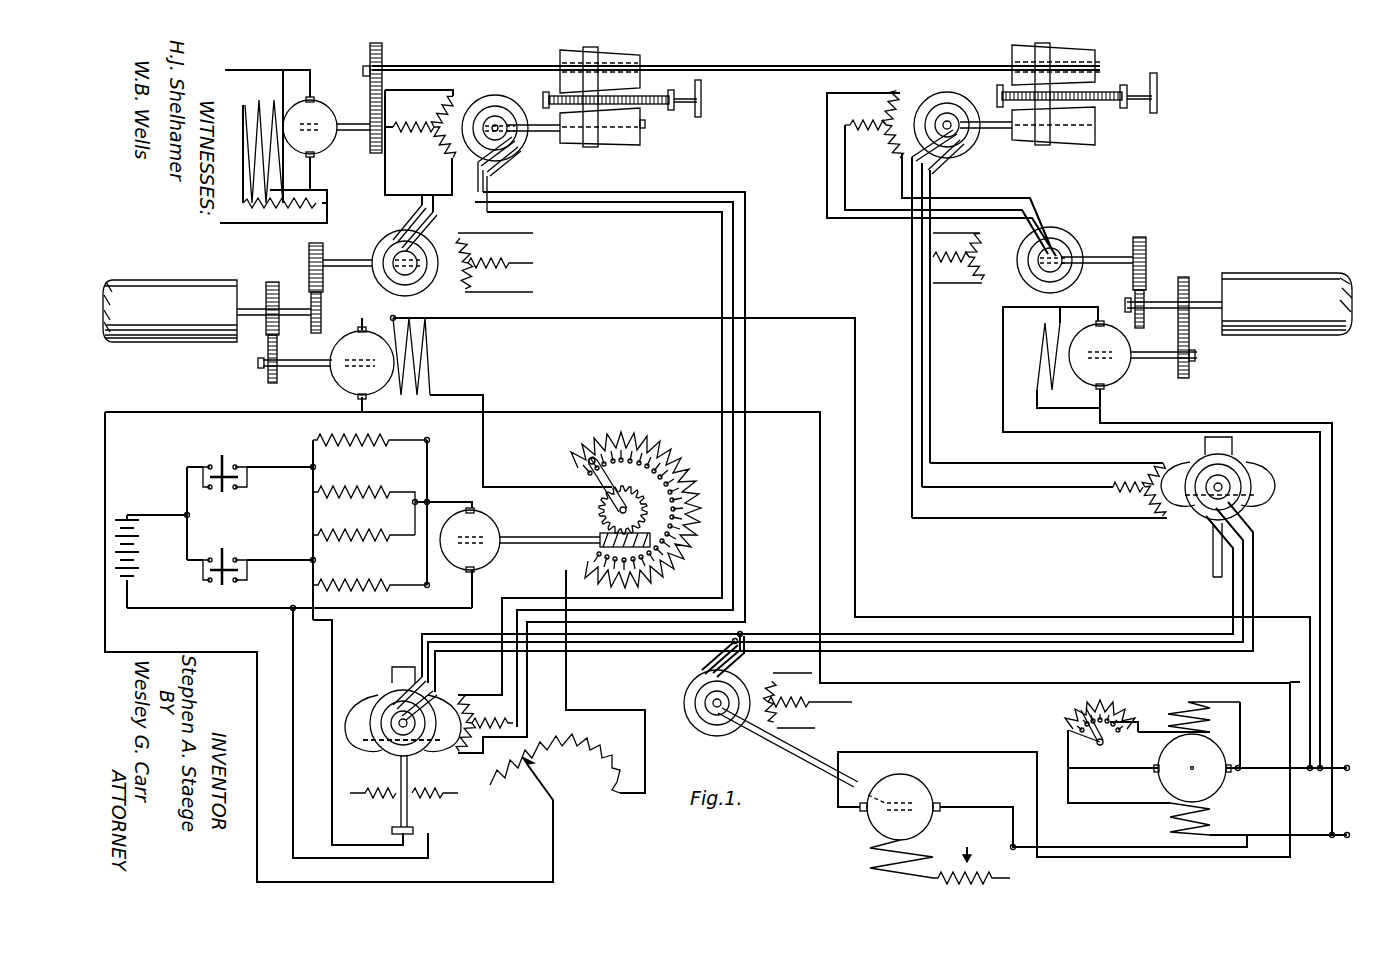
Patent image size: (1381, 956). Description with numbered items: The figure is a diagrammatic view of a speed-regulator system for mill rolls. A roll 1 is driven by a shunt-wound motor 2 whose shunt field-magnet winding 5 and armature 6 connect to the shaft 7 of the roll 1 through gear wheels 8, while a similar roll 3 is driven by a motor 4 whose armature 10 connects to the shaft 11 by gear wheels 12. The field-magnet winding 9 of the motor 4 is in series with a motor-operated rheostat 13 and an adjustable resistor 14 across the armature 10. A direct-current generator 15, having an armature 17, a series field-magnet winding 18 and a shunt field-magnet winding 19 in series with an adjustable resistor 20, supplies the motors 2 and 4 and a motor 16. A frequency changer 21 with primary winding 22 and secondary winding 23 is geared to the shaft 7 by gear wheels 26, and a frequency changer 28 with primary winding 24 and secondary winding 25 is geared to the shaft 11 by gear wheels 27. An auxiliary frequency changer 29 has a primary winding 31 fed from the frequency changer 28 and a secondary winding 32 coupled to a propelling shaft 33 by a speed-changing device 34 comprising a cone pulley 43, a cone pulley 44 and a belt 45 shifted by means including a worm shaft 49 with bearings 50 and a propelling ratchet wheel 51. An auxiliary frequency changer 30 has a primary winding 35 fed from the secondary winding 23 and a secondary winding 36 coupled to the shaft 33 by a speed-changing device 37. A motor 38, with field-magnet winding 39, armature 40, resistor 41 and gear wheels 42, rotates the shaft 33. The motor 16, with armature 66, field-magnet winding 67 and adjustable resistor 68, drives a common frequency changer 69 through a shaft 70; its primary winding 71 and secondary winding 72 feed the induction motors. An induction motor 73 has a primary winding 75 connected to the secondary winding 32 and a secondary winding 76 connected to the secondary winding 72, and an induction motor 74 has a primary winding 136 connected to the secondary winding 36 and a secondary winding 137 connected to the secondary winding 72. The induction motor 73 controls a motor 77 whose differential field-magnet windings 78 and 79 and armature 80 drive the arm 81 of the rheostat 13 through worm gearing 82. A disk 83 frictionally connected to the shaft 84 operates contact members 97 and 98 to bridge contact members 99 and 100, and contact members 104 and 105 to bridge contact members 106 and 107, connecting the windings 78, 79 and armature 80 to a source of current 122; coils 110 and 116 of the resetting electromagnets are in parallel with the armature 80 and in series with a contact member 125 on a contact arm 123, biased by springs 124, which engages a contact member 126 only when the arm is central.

The roll 1 is at (1245, 273).
The shunt-wound motor 2 is at (1152, 385).
The roll 3 is at (203, 280).
The motor 4 is at (320, 391).
The shunt field-magnet winding 5 is at (1037, 358).
The armature 6 is at (1135, 354).
The shaft 7 is at (1200, 298).
The gear wheels 8 is at (1192, 322).
The shunt field-magnet winding 9 is at (428, 353).
The armature 10 is at (348, 332).
The shaft 11 is at (246, 308).
The gear wheels 12 is at (266, 345).
The motor-operated rheostat 13 is at (700, 446).
The adjustable resistor 14 is at (575, 785).
The direct-current generator 15 is at (1253, 806).
The motor 16 is at (900, 776).
The armature 17 is at (1200, 755).
The series field-magnet winding 18 is at (1212, 823).
The shunt field-magnet winding 19 is at (1195, 704).
The adjustable resistor 20 is at (1095, 744).
The frequency changer 21 is at (1077, 210).
The primary winding 22 is at (971, 257).
The secondary winding 23 is at (1078, 250).
The primary winding 24 is at (463, 292).
The secondary winding 25 is at (422, 263).
The gear wheels 26 is at (1146, 272).
The gear wheels 27 is at (323, 280).
The frequency changer 28 is at (470, 228).
The auxiliary frequency changer 29 is at (548, 173).
The auxiliary frequency changer 30 is at (1015, 171).
The primary winding 31 is at (445, 108).
The secondary winding 32 is at (514, 108).
The propelling shaft 33 is at (705, 64).
The speed-changing device 34 is at (672, 95).
The primary winding 35 is at (898, 100).
The secondary winding 36 is at (958, 98).
The speed-changing device 37 is at (1150, 88).
The motor 38 is at (245, 115).
The field-magnet winding 39 is at (258, 103).
The armature 40 is at (330, 108).
The resistor 41 is at (264, 200).
The gear wheels 42 is at (370, 100).
The cone pulley 43 is at (638, 58).
The cone pulley 44 is at (624, 146).
The belt 45 is at (592, 147).
The worm shaft 49 is at (671, 105).
The bearings 50 is at (672, 108).
The propelling ratchet wheel 51 is at (702, 104).
The armature 66 is at (925, 795).
The field-magnet winding 67 is at (870, 860).
The adjustable resistor 68 is at (1010, 878).
The common frequency changer 69 is at (678, 678).
The shaft 70 is at (810, 762).
The primary winding 71 is at (800, 665).
The secondary winding 72 is at (690, 725).
The induction motor 73 is at (373, 668).
The induction motor 74 is at (1306, 456).
The primary winding 75 is at (478, 694).
The secondary winding 76 is at (378, 700).
The motor 77 is at (470, 475).
The field-magnet winding 78 is at (360, 480).
The field-magnet winding 79 is at (390, 528).
The armature 80 is at (492, 522).
The arm 81 is at (608, 472).
The worm gearing 82 is at (598, 534).
The disk 83 is at (358, 748).
The shaft 84 is at (418, 707).
The contact member 97 is at (247, 487).
The contact member 98 is at (238, 489).
The contact member 99 is at (235, 464).
The contact member 100 is at (209, 490).
The contact member 104 is at (247, 575).
The contact member 105 is at (238, 583).
The contact member 106 is at (235, 557).
The contact member 107 is at (209, 584).
The coil 110 is at (395, 436).
The coil 116 is at (386, 580).
The source of current 122 is at (138, 558).
The contact arm 123 is at (410, 772).
The springs 124 is at (443, 797).
The contact member 125 is at (392, 830).
The contact member 126 is at (408, 832).
The primary winding 136 is at (1157, 470).
The secondary winding 137 is at (1240, 505).